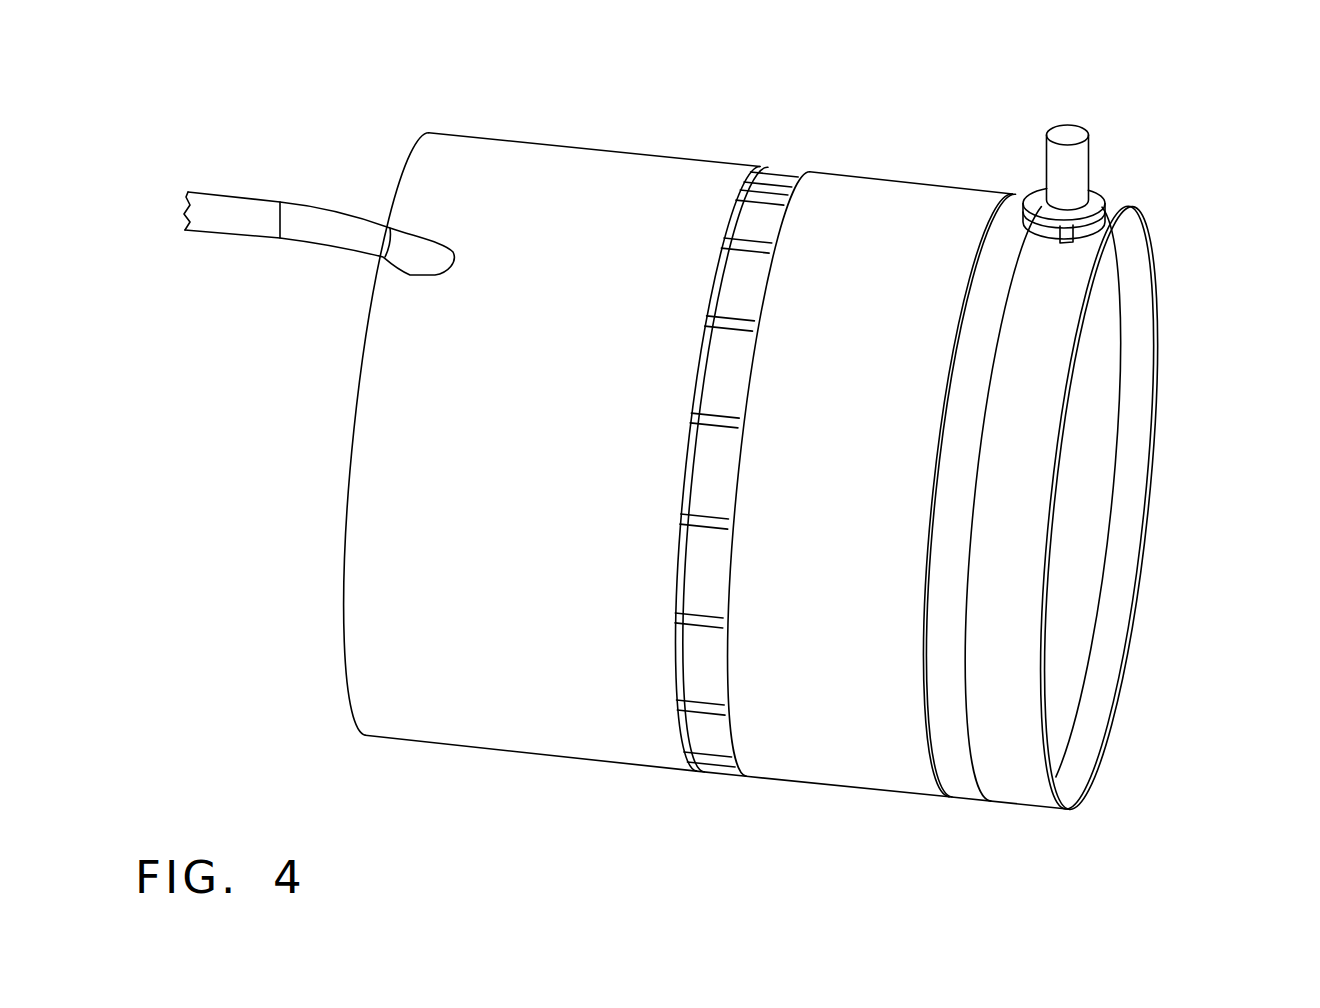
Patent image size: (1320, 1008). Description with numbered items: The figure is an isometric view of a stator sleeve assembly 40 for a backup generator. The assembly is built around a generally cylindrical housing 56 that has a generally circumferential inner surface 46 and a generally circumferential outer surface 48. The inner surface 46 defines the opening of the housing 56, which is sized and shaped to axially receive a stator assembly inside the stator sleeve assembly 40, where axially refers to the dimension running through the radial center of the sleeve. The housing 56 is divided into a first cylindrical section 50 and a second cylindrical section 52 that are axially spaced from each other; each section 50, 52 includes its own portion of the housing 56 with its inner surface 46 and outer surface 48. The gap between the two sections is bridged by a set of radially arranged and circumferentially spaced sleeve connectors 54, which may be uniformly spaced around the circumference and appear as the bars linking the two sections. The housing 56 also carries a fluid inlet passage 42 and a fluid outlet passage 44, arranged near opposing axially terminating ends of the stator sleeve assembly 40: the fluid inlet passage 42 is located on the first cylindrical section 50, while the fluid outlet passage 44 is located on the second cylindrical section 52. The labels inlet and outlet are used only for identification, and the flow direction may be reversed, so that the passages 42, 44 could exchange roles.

The stator sleeve assembly 40 is at (746, 52).
The fluid inlet passage 42 is at (1070, 178).
The fluid outlet passage 44 is at (335, 227).
The inner surface 46 is at (1106, 408).
The outer surface 48 is at (640, 207).
The first cylindrical section 50 is at (917, 223).
The second cylindrical section 52 is at (495, 183).
The sleeve connectors 54 is at (740, 318).
The housing 56 is at (849, 150).